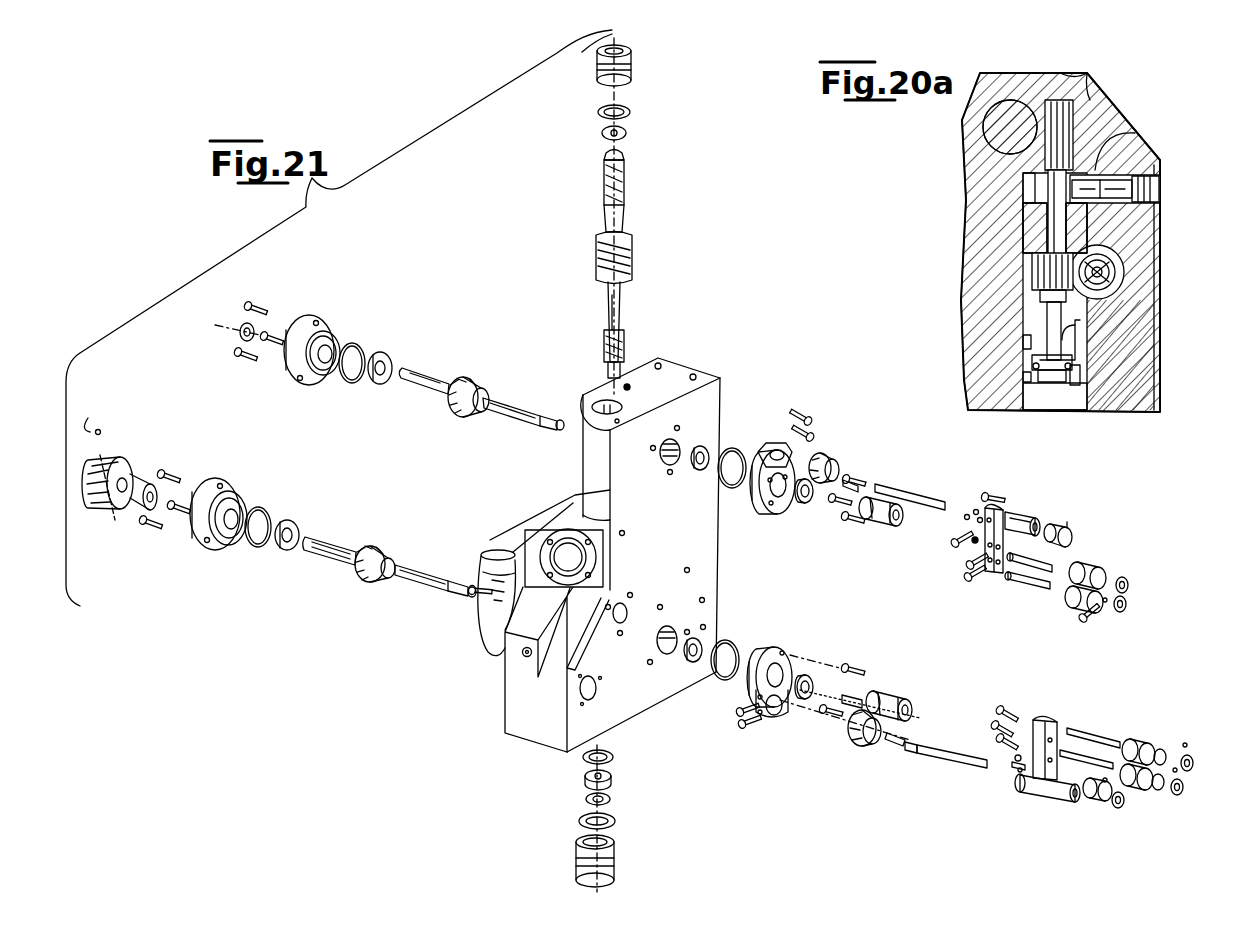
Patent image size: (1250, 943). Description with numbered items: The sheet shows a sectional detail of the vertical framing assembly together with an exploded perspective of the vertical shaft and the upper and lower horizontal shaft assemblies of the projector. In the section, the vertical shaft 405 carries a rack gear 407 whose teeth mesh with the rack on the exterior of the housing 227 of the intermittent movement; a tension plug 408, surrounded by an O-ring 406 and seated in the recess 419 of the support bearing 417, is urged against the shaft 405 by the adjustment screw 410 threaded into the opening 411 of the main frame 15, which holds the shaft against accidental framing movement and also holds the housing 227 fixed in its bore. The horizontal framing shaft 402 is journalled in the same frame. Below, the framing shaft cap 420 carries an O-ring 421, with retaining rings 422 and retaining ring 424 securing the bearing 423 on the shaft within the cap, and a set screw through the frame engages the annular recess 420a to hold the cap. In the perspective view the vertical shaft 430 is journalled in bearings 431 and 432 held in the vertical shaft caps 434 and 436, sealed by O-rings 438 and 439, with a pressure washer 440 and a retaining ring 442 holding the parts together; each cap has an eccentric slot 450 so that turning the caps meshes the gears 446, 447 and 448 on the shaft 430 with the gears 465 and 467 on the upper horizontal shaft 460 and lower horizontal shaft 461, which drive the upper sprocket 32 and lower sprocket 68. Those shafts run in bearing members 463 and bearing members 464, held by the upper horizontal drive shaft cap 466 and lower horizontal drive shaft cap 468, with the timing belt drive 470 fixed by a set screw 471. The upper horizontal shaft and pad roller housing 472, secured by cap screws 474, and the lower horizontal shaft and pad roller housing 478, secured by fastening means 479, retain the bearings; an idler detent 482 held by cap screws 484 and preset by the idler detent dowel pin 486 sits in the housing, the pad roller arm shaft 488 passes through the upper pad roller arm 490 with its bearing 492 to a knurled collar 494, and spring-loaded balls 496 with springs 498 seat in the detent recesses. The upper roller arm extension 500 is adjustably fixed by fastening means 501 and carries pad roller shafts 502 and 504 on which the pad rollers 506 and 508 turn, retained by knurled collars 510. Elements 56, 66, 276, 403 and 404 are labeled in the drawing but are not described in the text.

In FIG. 21, the main frame 15 is at (718, 402).
In FIG. 20A, the main frame 15 is at (1145, 378).
In FIG. 21, the upper sprocket 32 is at (878, 525).
In FIG. 21, the bracket assembly 56 is at (1048, 470).
In FIG. 21, the bracket assembly 66 is at (1003, 792).
In FIG. 21, the lower sprocket 68 is at (885, 700).
In FIG. 20A, the housing 227 is at (1000, 135).
In FIG. 21, the mounting flange 276 is at (567, 552).
In FIG. 20A, the horizontal framing shaft 402 is at (1112, 268).
In FIG. 20A, the shaft end 403 is at (1115, 285).
In FIG. 20A, the gear hub 404 is at (1032, 272).
In FIG. 20A, the vertical shaft 405 is at (1048, 250).
In FIG. 20A, the O-ring 406 is at (1150, 175).
In FIG. 20A, the rack gear 407 is at (1073, 125).
In FIG. 20A, the tension plug 408 is at (1160, 183).
In FIG. 20A, the adjustment screw 410 is at (1160, 198).
In FIG. 21, the opening 411 is at (522, 655).
In FIG. 20A, the opening 411 is at (1128, 135).
In FIG. 20A, the support bearing 417 is at (1026, 213).
In FIG. 20A, the recess 419 is at (1026, 195).
In FIG. 20A, the framing shaft cap 420 is at (1027, 412).
In FIG. 20A, the annular recess 420a is at (1022, 388).
In FIG. 20A, the O-ring 421 is at (1026, 345).
In FIG. 20A, the retaining rings 422 is at (1080, 320).
In FIG. 20A, the bearing 423 is at (1030, 368).
In FIG. 20A, the retaining ring 424 is at (1082, 332).
In FIG. 21, the vertical shaft 430 is at (626, 209).
In FIG. 21, the bearing 431 is at (628, 130).
In FIG. 21, the bearing 432 is at (616, 780).
In FIG. 21, the vertical shaft cap 434 is at (633, 50).
In FIG. 21, the vertical shaft cap 436 is at (616, 856).
In FIG. 21, the O-ring 438 is at (596, 112).
In FIG. 21, the O-ring 439 is at (580, 822).
In FIG. 21, the pressure washer 440 is at (613, 800).
In FIG. 21, the retaining ring 442 is at (615, 755).
In FIG. 21, the gear 446 is at (626, 172).
In FIG. 21, the gear 447 is at (632, 255).
In FIG. 21, the gear 448 is at (622, 342).
In FIG. 21, the slot 450 is at (582, 52).
In FIG. 21, the upper horizontal shaft 460 is at (500, 410).
In FIG. 21, the lower horizontal shaft 461 is at (425, 565).
In FIG. 21, the bearing members 463 is at (385, 352).
In FIG. 21, the bearing members 464 is at (698, 466).
In FIG. 21, the gear 465 is at (475, 376).
In FIG. 21, the upper horizontal drive shaft cap 466 is at (322, 325).
In FIG. 21, the gear 467 is at (368, 585).
In FIG. 21, the lower horizontal drive shaft cap 468 is at (205, 548).
In FIG. 21, the timing belt drive 470 is at (118, 460).
In FIG. 21, the set screw 471 is at (101, 413).
In FIG. 21, the upper horizontal shaft and pad roller housing 472 is at (768, 455).
In FIG. 21, the cap screws 474 is at (845, 522).
In FIG. 21, the lower horizontal shaft and pad roller housing 478 is at (768, 648).
In FIG. 21, the fastening means 479 is at (828, 715).
In FIG. 21, the idler detent 482 is at (830, 465).
In FIG. 21, the cap screws 484 is at (808, 424).
In FIG. 21, the idler detent dowel pin 486 is at (880, 490).
In FIG. 21, the pad roller arm shaft 488 is at (912, 492).
In FIG. 21, the upper pad roller arm 490 is at (1040, 518).
In FIG. 21, the bearing 492 is at (1050, 545).
In FIG. 21, the knurled collar 494 is at (1070, 530).
In FIG. 21, the balls 496 is at (968, 512).
In FIG. 21, the springs 498 is at (990, 505).
In FIG. 21, the upper roller arm extension 500 is at (993, 577).
In FIG. 21, the fastening means 501 is at (952, 540).
In FIG. 21, the pad roller shaft 502 is at (1040, 585).
In FIG. 21, the pad roller shaft 504 is at (1033, 655).
In FIG. 21, the pad roller 506 is at (1095, 570).
In FIG. 21, the pad roller 508 is at (1075, 612).
In FIG. 21, the knurled collars 510 is at (1128, 588).